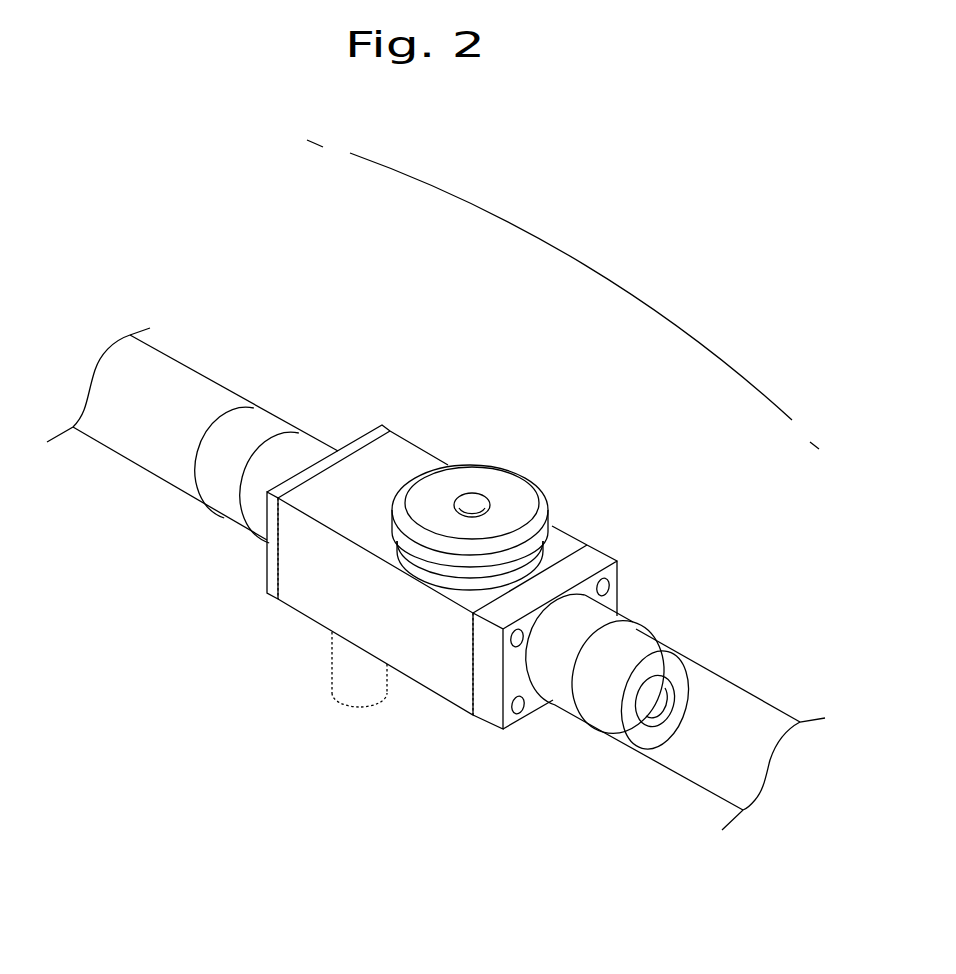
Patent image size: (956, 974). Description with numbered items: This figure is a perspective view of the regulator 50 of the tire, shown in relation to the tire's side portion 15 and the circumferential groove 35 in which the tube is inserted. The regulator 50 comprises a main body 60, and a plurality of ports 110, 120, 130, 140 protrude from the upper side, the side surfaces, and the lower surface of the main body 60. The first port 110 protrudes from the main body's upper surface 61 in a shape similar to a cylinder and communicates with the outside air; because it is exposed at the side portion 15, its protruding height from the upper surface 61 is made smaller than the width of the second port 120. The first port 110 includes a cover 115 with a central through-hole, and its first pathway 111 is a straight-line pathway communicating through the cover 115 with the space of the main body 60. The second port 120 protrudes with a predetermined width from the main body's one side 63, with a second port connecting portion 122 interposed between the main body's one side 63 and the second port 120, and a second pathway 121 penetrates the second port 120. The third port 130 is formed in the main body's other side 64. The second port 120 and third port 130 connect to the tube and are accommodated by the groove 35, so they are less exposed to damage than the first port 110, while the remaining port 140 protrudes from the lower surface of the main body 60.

The side portion 15 is at (567, 285).
The groove 35 is at (138, 438).
The regulator 50 is at (275, 318).
The main body 60 is at (294, 624).
The main body's upper surface 61 is at (408, 455).
The main body's one side 63 is at (473, 713).
The main body's other side 64 is at (387, 427).
The first port 110 is at (504, 483).
The first pathway 111 is at (493, 507).
The cover 115 is at (480, 482).
The second port 120 is at (675, 691).
The second pathway 121 is at (662, 692).
The second port connecting portion 122 is at (488, 710).
The third port 130 is at (316, 421).
The port 140 is at (337, 714).